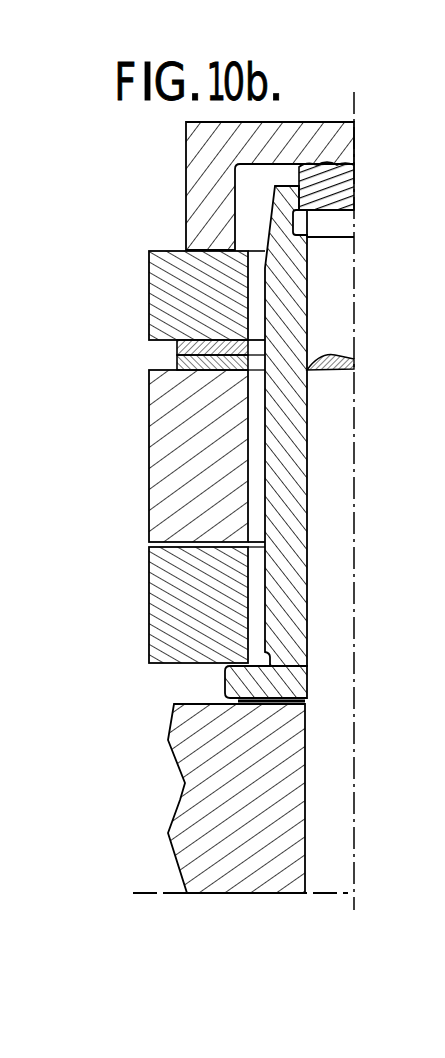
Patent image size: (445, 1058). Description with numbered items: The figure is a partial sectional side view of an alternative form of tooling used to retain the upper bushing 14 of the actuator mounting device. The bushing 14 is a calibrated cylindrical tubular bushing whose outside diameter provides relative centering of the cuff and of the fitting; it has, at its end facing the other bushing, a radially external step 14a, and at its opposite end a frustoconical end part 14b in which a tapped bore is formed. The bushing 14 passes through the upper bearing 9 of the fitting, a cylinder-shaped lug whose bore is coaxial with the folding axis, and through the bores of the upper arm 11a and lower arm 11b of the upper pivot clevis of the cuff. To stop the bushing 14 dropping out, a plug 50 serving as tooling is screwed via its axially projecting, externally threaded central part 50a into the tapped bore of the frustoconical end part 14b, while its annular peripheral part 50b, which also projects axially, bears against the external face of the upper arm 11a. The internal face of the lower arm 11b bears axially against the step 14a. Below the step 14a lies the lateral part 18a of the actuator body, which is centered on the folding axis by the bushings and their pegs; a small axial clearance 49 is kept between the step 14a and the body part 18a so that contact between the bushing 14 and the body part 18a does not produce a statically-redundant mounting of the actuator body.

The plug 50 is at (185, 148).
The central part of the plug 50a is at (330, 182).
The annular peripheral part of the plug 50b is at (203, 238).
The bushing 14 is at (285, 478).
The radially external step 14a is at (240, 682).
The frustoconical end part 14b is at (304, 211).
The upper arm 11a is at (190, 297).
The lower arm 11b is at (175, 607).
The upper bearing 9 is at (188, 430).
The axial clearance 49 is at (240, 701).
The lateral part of the actuator body 18a is at (225, 808).